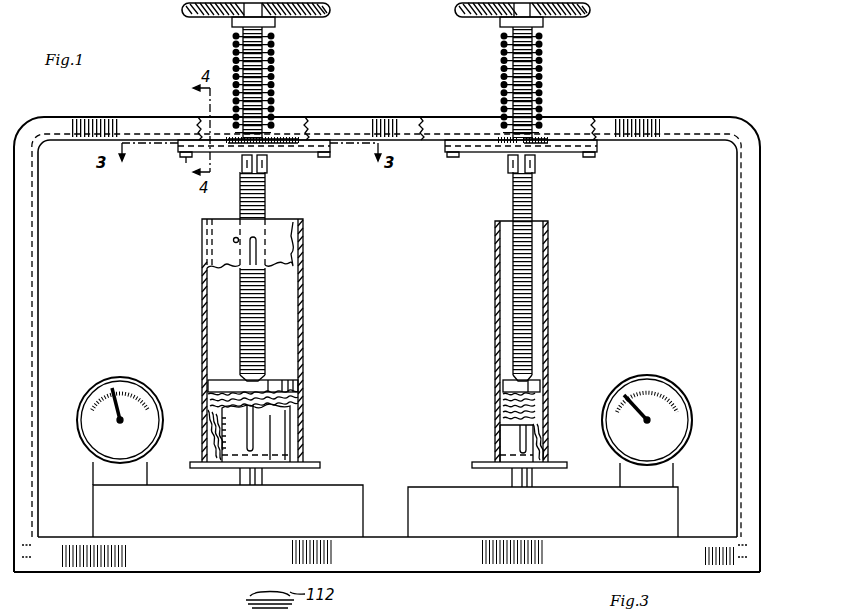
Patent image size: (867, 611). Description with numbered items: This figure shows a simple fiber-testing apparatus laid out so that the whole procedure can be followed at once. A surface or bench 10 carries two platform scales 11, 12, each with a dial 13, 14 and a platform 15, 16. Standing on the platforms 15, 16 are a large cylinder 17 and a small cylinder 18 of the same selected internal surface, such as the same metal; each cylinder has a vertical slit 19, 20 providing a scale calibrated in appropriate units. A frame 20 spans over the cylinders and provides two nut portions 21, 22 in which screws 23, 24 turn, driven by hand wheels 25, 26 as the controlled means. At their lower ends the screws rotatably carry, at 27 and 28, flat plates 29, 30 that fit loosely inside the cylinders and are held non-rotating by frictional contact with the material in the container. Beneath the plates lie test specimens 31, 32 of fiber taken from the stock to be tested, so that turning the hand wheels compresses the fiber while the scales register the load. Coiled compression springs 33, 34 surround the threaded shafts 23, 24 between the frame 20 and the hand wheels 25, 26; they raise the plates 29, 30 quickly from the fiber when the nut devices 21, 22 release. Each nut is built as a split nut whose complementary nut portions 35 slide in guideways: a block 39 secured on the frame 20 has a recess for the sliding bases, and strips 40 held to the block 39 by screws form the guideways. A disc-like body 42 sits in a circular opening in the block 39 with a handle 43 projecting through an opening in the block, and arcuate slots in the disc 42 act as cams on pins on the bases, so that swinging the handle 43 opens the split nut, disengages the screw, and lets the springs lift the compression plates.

The bench 10 is at (160, 556).
The platform scale 11 is at (352, 485).
The platform scale 12 is at (423, 487).
The dial 13 is at (116, 380).
The dial 14 is at (692, 438).
The platform 15 is at (320, 465).
The platform 16 is at (555, 465).
The large cylinder 17 is at (303, 295).
The small cylinder 18 is at (548, 290).
The vertical slit 19 is at (255, 440).
The frame 20 is at (38, 196).
The nut portion 21 is at (268, 170).
The nut portion 22 is at (508, 165).
The screw 23 is at (240, 197).
The screw 24 is at (532, 192).
The hand wheel 25 is at (326, 14).
The hand wheel 26 is at (588, 14).
The rotatable carrying point 27 is at (262, 380).
The rotatable carrying point 28 is at (513, 380).
The flat plate 29 is at (298, 385).
The flat plate 30 is at (578, 360).
The test specimen 31 is at (298, 402).
The test specimen 32 is at (540, 405).
The coiled compression spring 33 is at (275, 80).
The coiled compression spring 34 is at (540, 78).
The nut portion 35 is at (373, 428).
The block 39 is at (180, 148).
The strip 40 is at (192, 157).
The disc-like body 42 is at (545, 140).
The handle 43 is at (500, 140).